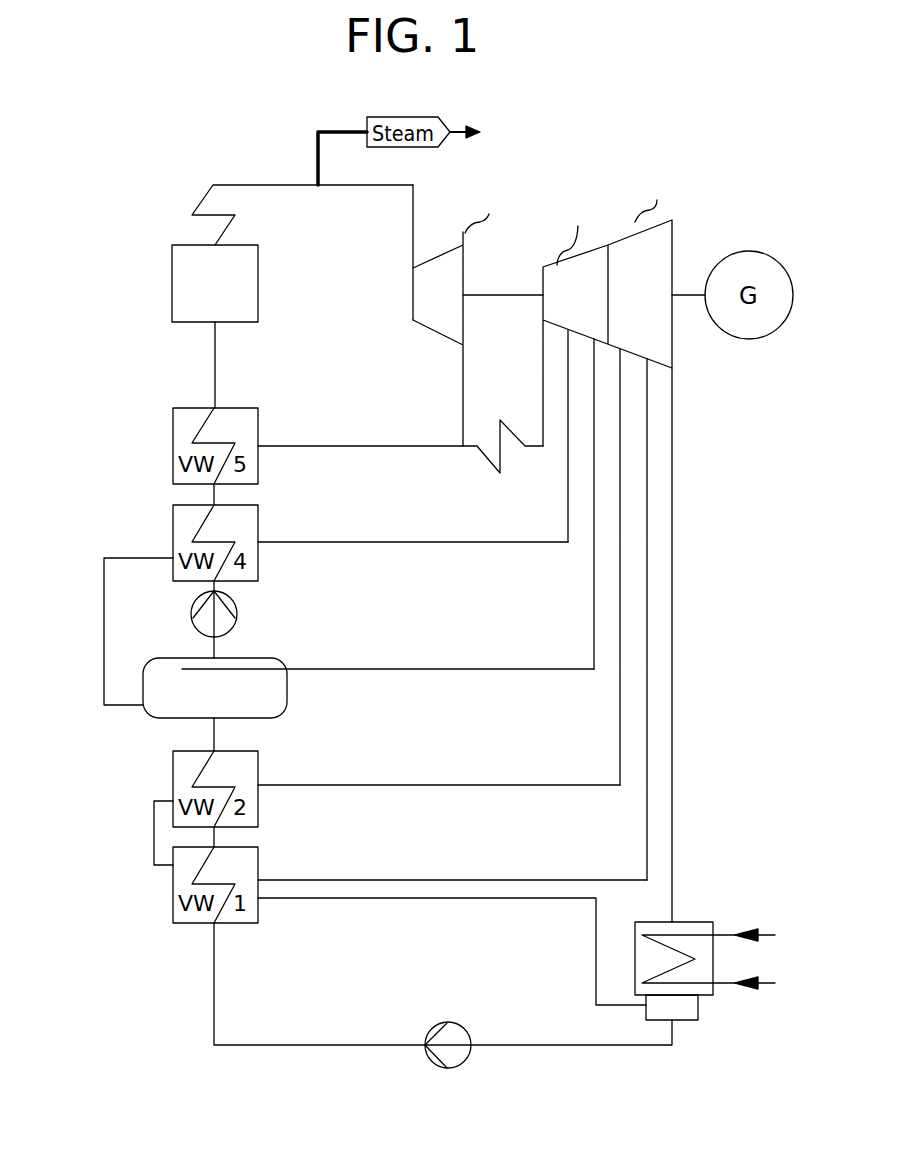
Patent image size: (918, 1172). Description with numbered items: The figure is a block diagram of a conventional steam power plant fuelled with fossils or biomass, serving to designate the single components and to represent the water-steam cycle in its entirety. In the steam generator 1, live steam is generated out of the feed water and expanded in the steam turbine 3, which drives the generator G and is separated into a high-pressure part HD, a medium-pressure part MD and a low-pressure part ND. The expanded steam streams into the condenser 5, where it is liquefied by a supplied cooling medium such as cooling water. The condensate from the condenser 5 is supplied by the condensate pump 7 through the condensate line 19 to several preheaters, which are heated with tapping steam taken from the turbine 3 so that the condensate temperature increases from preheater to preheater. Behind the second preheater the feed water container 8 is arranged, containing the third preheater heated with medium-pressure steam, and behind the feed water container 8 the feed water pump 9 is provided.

The steam generator 1 is at (172, 280).
The steam turbine 3 is at (541, 143).
The condenser 5 is at (698, 922).
The condensate pump 7 is at (466, 1065).
The feed water container 8 is at (154, 718).
The feed water pump 9 is at (191, 614).
The condensate line 19 is at (563, 1046).